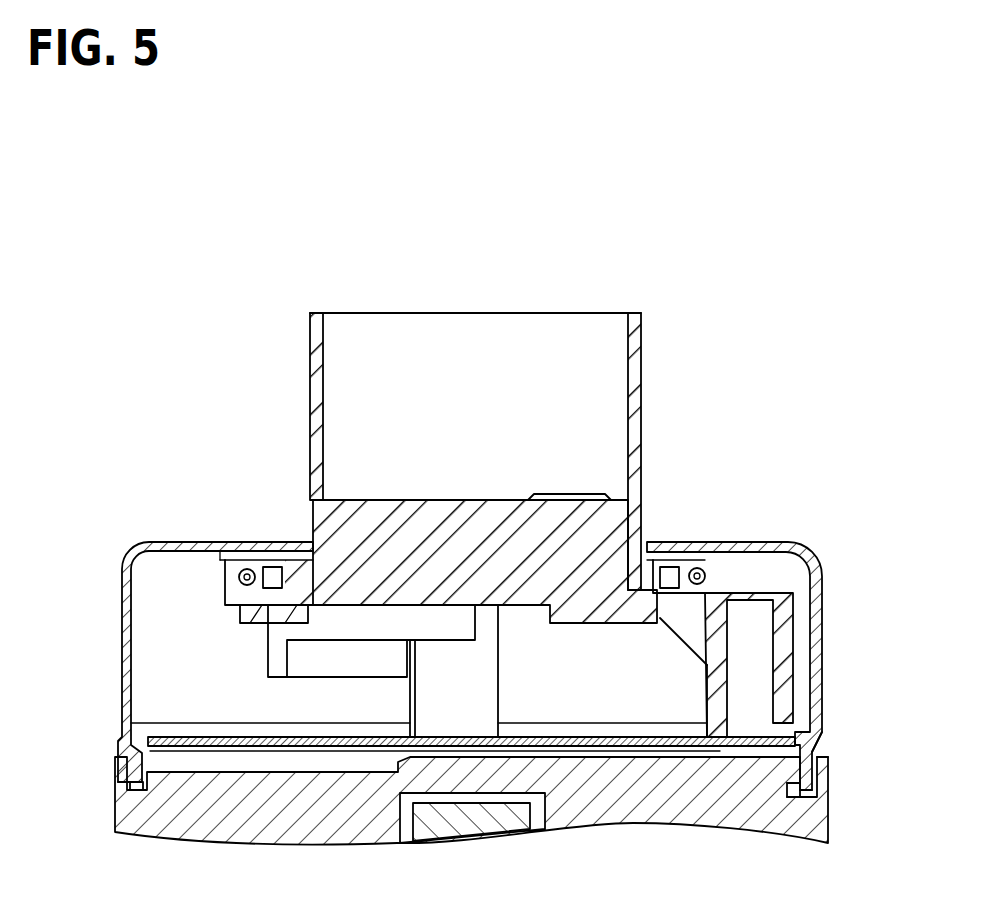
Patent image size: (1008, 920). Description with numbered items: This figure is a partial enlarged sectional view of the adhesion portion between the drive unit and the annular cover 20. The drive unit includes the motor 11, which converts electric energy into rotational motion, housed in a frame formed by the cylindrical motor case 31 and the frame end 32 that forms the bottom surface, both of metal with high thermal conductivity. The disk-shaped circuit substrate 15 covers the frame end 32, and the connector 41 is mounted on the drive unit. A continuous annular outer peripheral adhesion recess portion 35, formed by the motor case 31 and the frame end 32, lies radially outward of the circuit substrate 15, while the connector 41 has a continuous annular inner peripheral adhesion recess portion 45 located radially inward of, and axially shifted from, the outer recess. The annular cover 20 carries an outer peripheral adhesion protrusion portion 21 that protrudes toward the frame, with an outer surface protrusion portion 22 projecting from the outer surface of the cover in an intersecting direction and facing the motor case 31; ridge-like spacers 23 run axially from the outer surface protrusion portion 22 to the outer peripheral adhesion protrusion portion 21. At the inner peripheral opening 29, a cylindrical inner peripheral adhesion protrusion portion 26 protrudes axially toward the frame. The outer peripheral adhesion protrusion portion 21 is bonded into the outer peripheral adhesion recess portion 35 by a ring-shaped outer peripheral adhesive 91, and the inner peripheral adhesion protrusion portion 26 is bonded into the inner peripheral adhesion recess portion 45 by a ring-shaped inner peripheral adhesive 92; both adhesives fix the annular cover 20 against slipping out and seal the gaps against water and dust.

The motor 11 is at (441, 828).
The circuit substrate 15 is at (207, 748).
The annular cover 20 is at (152, 543).
The outer peripheral adhesion protrusion portion 21 is at (810, 776).
The outer surface protrusion portion 22 is at (825, 740).
The spacer 23 is at (826, 765).
The inner peripheral adhesion protrusion portion 26 is at (705, 579).
The inner peripheral opening 29 is at (270, 548).
The motor case 31 is at (135, 826).
The frame end 32 is at (298, 834).
The outer peripheral adhesion recess portion 35 is at (790, 785).
The connector 41 is at (477, 358).
The inner peripheral adhesion recess portion 45 is at (697, 563).
The outer peripheral adhesive 91 is at (143, 787).
The inner peripheral adhesive 92 is at (240, 563).